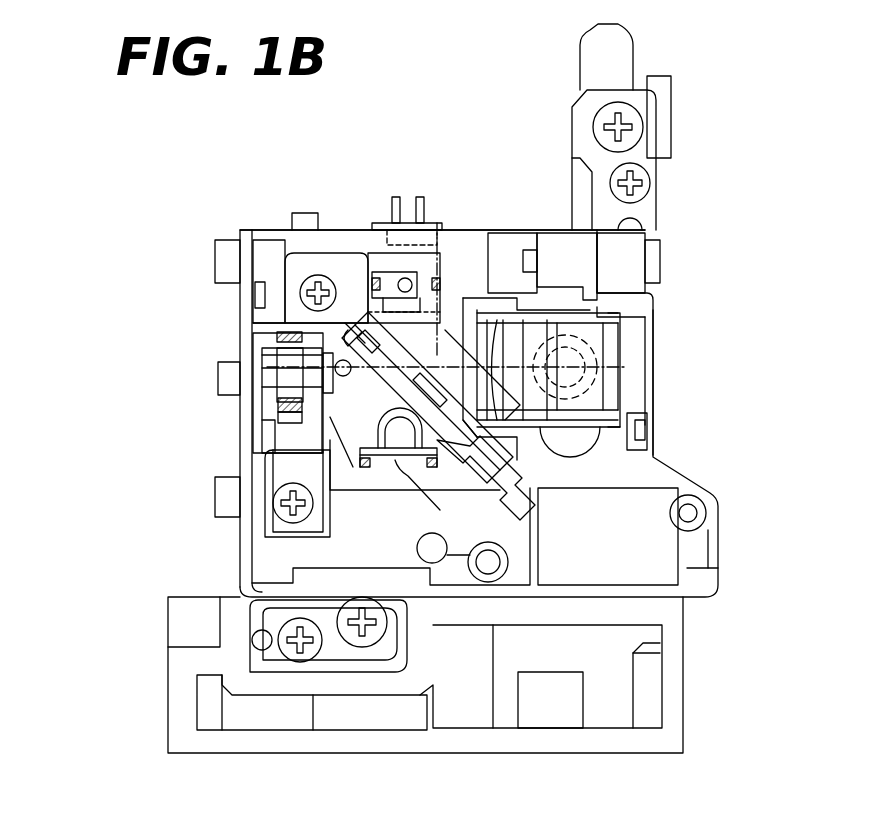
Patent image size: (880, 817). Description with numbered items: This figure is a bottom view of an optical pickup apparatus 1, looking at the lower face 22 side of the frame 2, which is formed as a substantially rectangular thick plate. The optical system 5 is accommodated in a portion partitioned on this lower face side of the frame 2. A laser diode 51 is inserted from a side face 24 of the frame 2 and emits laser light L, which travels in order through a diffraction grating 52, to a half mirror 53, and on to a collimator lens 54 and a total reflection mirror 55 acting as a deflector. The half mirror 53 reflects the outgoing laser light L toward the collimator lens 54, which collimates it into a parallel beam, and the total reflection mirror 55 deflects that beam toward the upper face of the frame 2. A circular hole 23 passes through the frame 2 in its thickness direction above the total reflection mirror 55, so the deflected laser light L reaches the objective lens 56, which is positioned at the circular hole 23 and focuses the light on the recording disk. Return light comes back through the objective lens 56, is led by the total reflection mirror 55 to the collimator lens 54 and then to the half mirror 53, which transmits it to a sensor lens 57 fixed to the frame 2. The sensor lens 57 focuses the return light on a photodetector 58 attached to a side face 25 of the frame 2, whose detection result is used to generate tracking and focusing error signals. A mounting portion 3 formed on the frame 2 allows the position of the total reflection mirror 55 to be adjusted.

The optical pickup apparatus 1 is at (744, 113).
The frame 2 is at (665, 555).
The mounting portion 3 is at (645, 440).
The optical system 5 is at (443, 345).
The lower face 22 is at (505, 470).
The circular hole 23 is at (620, 348).
The side face 24 is at (342, 228).
The side face 25 is at (240, 323).
The laser diode 51 is at (405, 218).
The diffraction grating 52 is at (443, 320).
The half mirror 53 is at (398, 390).
The collimator lens 54 is at (490, 330).
The total reflection mirror 55 is at (570, 330).
The objective lens 56 is at (620, 382).
The sensor lens 57 is at (322, 380).
The photodetector 58 is at (218, 378).
The laser light L is at (437, 223).